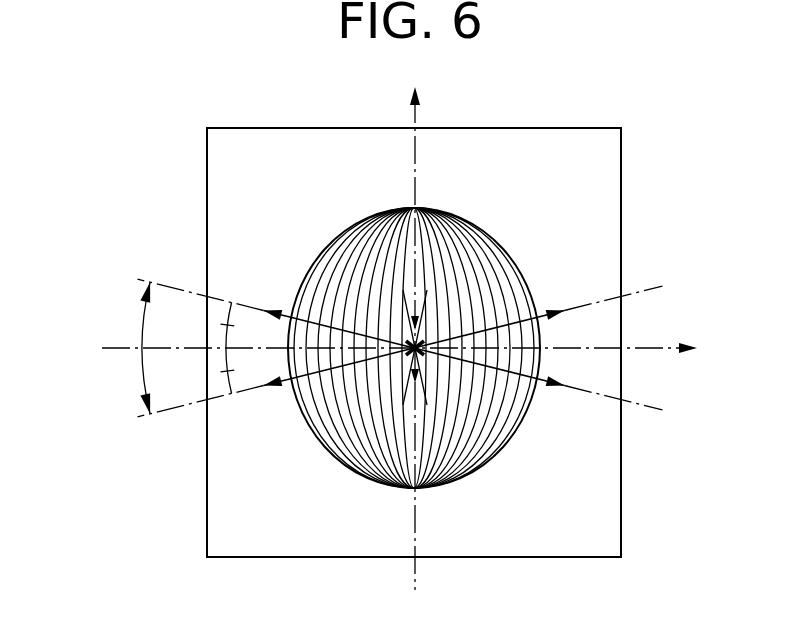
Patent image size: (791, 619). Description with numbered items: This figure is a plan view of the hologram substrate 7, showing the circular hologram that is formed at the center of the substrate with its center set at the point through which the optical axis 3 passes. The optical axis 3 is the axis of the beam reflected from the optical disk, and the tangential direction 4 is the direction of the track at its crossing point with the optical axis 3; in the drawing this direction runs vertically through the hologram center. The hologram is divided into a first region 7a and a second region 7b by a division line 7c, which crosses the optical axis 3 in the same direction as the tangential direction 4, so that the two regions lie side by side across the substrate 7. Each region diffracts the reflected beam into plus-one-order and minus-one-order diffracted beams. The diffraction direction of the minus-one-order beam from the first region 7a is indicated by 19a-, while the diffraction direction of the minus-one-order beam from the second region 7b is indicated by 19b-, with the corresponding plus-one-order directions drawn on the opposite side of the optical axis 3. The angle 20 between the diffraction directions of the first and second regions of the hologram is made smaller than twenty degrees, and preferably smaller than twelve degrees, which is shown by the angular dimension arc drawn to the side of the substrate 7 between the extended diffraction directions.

The optical axis 3 is at (420, 336).
The tangential direction 4 is at (416, 152).
The hologram substrate 7 is at (608, 180).
The first region 7a is at (480, 423).
The second region 7b is at (363, 427).
The division line 7c is at (414, 452).
The diffraction direction of −1-order diffracted beam from first region 19a- is at (305, 318).
The diffraction direction of −1-order diffracted beam from second region 19b- is at (303, 407).
The angle 20 is at (140, 371).